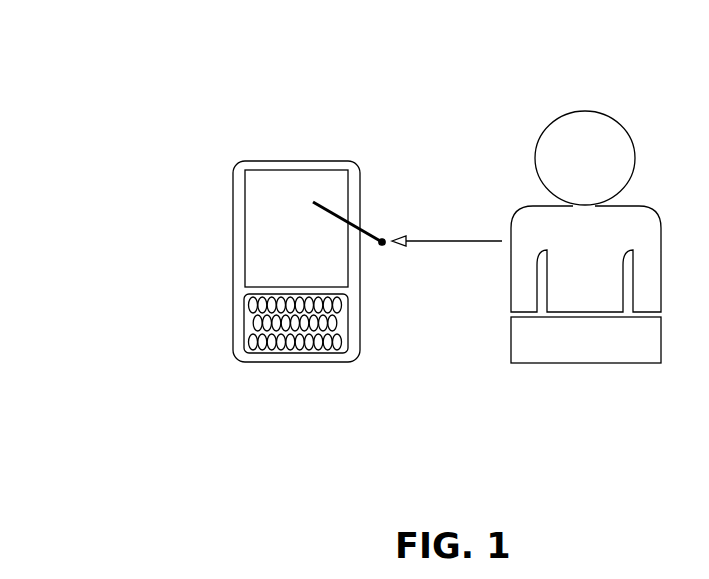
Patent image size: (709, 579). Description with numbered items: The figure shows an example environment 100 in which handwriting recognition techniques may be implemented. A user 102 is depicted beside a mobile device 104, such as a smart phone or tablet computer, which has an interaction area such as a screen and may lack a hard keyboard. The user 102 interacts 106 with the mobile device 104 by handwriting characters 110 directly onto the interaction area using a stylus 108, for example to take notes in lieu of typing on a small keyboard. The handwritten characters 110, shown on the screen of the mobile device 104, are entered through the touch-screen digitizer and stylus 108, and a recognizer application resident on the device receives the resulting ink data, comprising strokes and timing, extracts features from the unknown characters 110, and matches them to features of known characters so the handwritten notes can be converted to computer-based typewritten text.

The example environment 100 is at (125, 34).
The user 102 is at (570, 363).
The mobile device 104 is at (300, 361).
The interaction 106 is at (468, 241).
The stylus 108 is at (361, 232).
The handwritten characters 110 is at (297, 188).